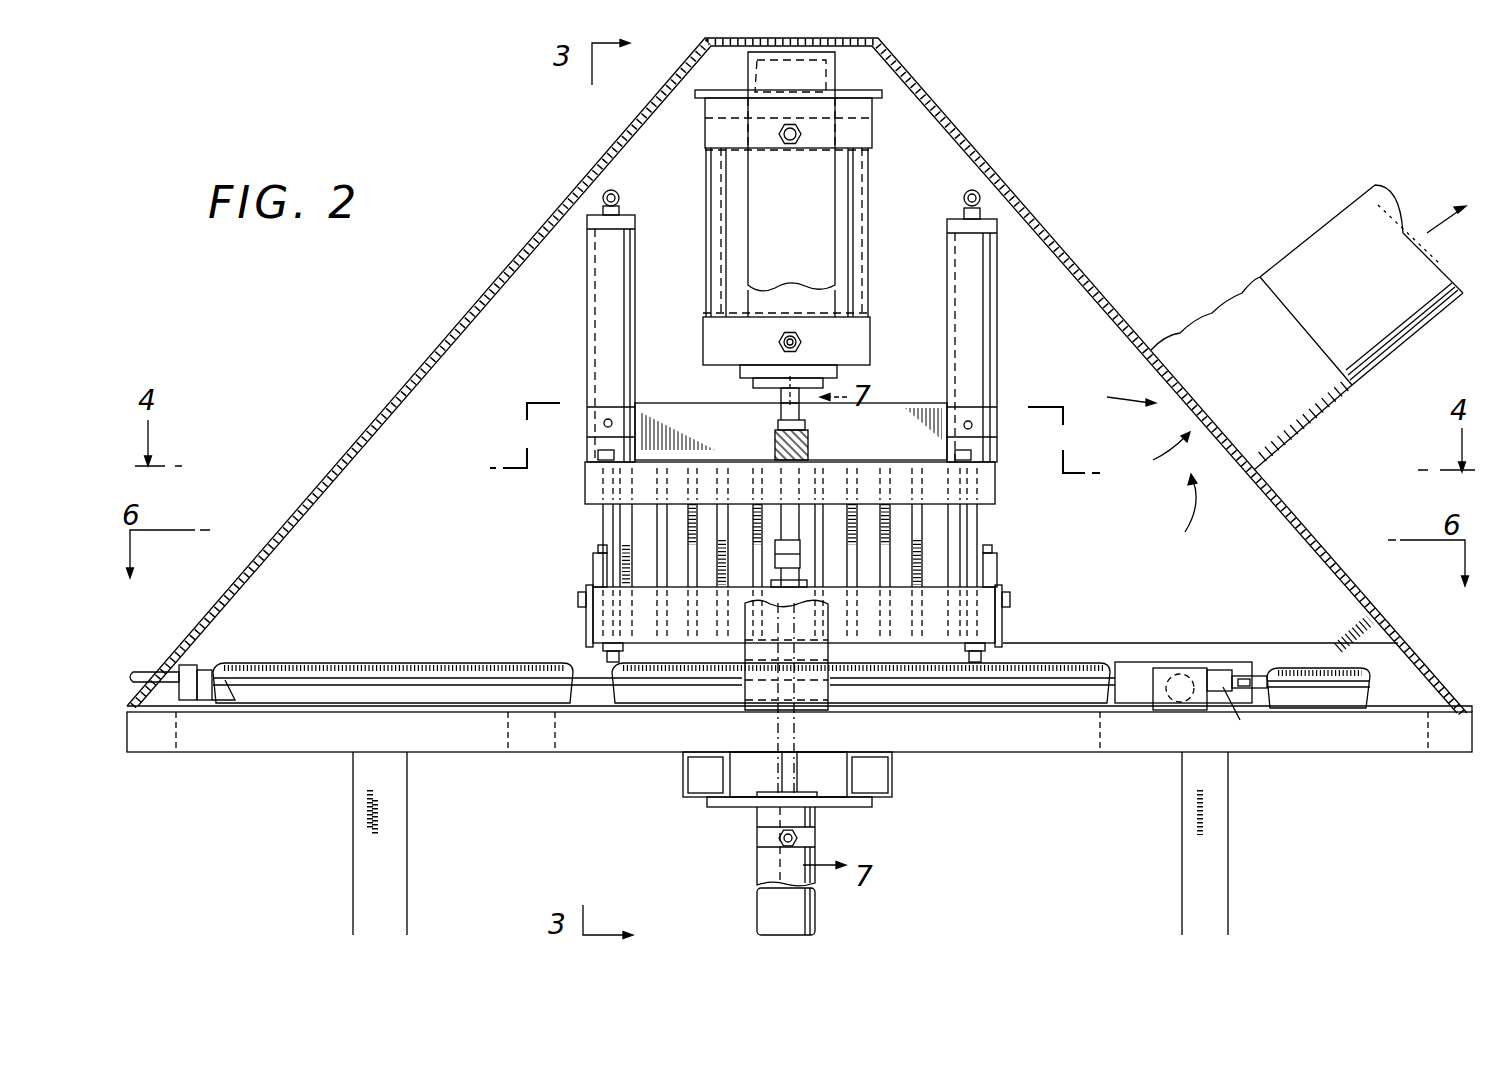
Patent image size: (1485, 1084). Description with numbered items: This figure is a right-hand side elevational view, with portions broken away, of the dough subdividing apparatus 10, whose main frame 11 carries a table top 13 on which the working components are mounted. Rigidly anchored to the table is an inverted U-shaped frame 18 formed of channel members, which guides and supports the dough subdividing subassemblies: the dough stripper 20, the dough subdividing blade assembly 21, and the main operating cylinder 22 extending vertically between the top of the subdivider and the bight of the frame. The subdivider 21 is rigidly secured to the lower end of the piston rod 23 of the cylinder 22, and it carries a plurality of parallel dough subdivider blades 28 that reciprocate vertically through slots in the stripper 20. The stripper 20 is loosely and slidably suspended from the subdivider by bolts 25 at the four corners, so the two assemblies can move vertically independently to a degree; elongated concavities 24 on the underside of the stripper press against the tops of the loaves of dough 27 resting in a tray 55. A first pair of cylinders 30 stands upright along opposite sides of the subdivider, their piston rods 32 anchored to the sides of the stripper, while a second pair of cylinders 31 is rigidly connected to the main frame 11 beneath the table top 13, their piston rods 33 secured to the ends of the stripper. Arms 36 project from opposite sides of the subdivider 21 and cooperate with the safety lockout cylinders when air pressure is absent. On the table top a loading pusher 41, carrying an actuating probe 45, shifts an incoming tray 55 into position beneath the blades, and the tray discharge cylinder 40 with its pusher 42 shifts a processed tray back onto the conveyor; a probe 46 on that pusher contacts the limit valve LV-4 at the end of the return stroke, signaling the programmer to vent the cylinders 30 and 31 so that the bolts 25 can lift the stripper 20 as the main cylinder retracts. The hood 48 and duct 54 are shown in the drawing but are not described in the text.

The dough subdividing apparatus 10 is at (1096, 161).
The main frame 11 is at (524, 759).
The table top 13 is at (262, 718).
The inverted U-shaped frame 18 is at (803, 252).
The dough stripper 20 is at (1006, 618).
The dough subdividing blade assembly 21 is at (1004, 487).
The main operating cylinder 22 is at (842, 185).
The piston rod 23 is at (760, 380).
The elongated concavities 24 is at (1310, 668).
The bolts 25 is at (598, 572).
The loaf of dough 27 is at (382, 665).
The dough subdivider blades 28 is at (692, 548).
The first pair of cylinders 30 is at (587, 336).
The second pair of cylinders 31 is at (760, 862).
The piston rods 32 is at (600, 514).
The piston rods 33 is at (800, 768).
The arms 36 is at (810, 445).
The tray discharge cylinder 40 is at (1172, 668).
The pusher 41 is at (188, 667).
The pusher 42 is at (1132, 662).
The actuating probe 45 is at (150, 678).
The probe 46 is at (1262, 676).
The hood 48 is at (436, 348).
The exhaust duct 54 is at (1317, 237).
The tray 55 is at (443, 692).
The limit valve LV-4 is at (1220, 719).